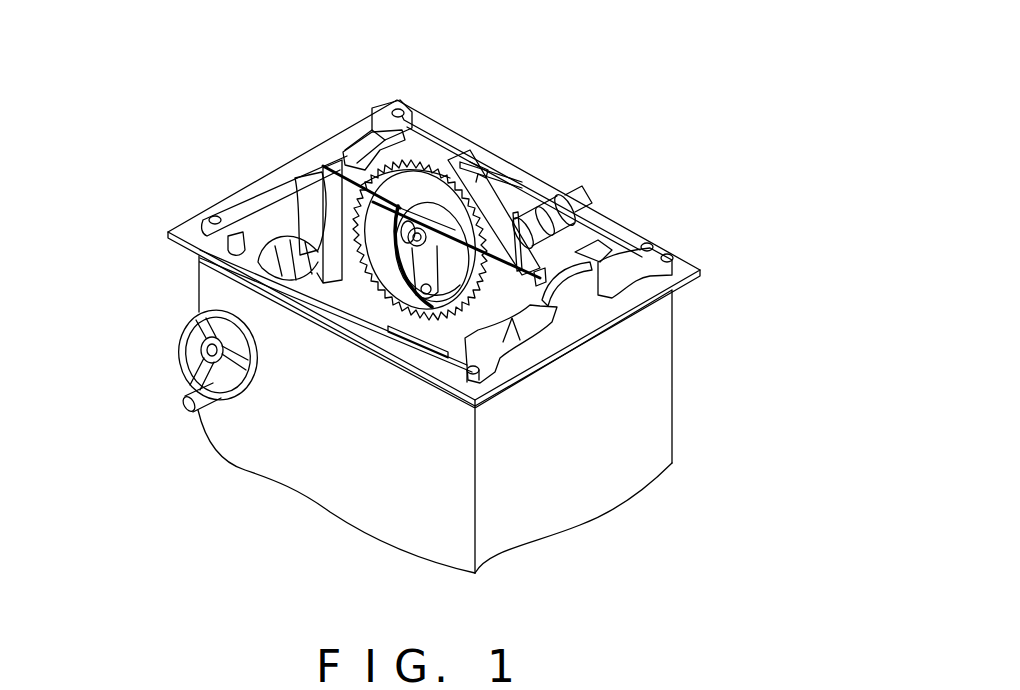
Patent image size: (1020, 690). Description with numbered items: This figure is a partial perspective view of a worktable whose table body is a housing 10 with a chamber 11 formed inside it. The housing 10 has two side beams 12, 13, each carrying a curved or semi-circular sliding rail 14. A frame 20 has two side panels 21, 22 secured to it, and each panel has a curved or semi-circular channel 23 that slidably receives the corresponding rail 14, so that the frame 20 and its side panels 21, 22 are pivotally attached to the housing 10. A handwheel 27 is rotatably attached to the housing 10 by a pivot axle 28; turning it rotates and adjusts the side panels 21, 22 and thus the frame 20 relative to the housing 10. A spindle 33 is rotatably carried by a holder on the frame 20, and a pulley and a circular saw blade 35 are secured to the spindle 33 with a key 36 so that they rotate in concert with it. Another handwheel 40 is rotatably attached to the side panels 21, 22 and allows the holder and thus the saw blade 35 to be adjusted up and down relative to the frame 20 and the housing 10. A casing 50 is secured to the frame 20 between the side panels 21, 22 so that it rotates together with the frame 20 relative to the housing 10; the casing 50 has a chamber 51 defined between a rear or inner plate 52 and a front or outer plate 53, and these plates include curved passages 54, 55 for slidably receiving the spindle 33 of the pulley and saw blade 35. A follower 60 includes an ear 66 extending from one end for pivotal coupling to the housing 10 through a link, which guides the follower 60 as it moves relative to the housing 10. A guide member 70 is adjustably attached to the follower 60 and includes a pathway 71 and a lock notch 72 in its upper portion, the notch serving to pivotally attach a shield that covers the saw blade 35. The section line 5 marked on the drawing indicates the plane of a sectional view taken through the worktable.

The section line 5- 5 is at (227, 192).
The housing 10 is at (660, 405).
The chamber 11 is at (220, 252).
The side beam 12 is at (385, 128).
The side beam 13 is at (620, 292).
The rail 14 is at (315, 200).
The frame 20 is at (550, 218).
The side panel 21 is at (330, 185).
The side panel 22 is at (600, 280).
The channel 23 is at (610, 236).
The handwheel 27 is at (188, 352).
The pivot axle 28 is at (183, 390).
The spindle 33 is at (407, 242).
The saw blade 35 is at (445, 290).
The key 36 is at (590, 256).
The handwheel 40 is at (268, 228).
The casing 50 is at (513, 330).
The chamber 51 is at (418, 150).
The rear plate 52 is at (478, 228).
The front plate 53 is at (330, 235).
The curved passage 54 is at (420, 215).
The curved passage 55 is at (390, 285).
The follower 60 is at (405, 252).
The ear 66 is at (402, 280).
The guide member 70 is at (498, 200).
The pathway 71 is at (528, 212).
The lock notch 72 is at (481, 170).